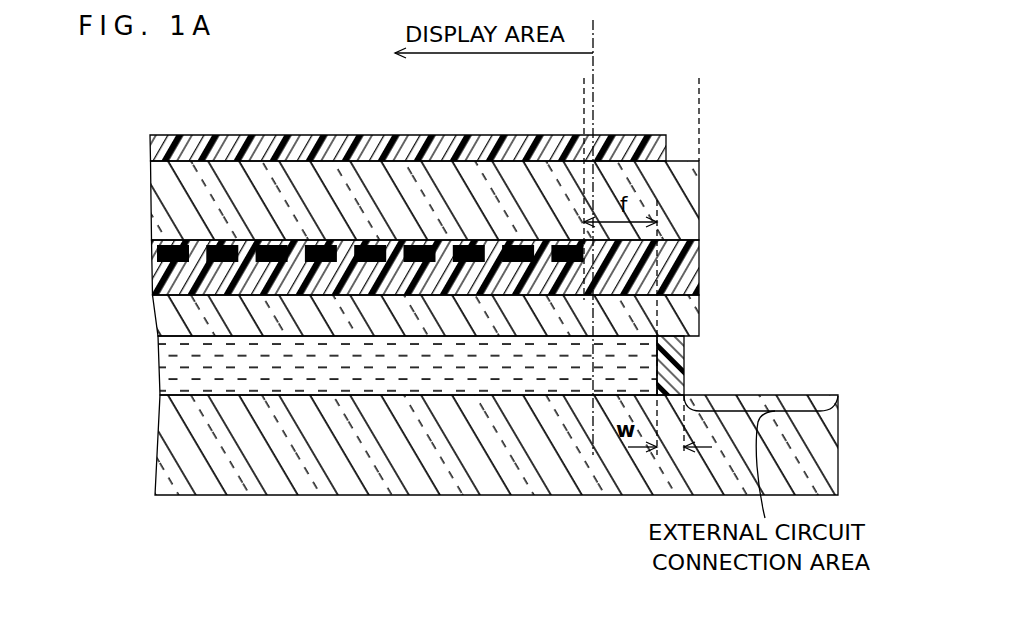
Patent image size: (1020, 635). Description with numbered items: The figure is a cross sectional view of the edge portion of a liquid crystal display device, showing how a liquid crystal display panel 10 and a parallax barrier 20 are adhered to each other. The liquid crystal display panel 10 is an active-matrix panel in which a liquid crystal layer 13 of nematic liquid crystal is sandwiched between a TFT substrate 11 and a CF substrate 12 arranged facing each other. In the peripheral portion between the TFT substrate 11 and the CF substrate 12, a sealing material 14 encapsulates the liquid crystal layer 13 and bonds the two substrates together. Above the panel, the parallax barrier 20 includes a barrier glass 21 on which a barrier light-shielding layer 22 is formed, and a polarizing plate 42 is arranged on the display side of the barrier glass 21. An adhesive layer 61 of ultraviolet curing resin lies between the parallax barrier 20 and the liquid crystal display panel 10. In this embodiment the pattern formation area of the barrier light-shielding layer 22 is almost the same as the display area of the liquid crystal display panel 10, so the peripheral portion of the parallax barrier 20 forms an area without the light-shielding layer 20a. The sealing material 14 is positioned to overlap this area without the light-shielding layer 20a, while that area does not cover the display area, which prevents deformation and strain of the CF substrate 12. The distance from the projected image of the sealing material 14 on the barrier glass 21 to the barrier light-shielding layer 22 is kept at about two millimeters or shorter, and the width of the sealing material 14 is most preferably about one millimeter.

The liquid crystal display panel 10 is at (78, 312).
The TFT substrate 11 is at (158, 443).
The CF substrate 12 is at (157, 323).
The liquid crystal layer 13 is at (159, 373).
The sealing material 14 is at (685, 371).
The parallax barrier 20 is at (80, 197).
The area without the light-shielding layer 20a is at (699, 104).
The barrier glass 21 is at (152, 212).
The barrier light-shielding layer 22 is at (153, 253).
The polarizing plate 42 is at (151, 151).
The adhesive layer 61 is at (153, 286).